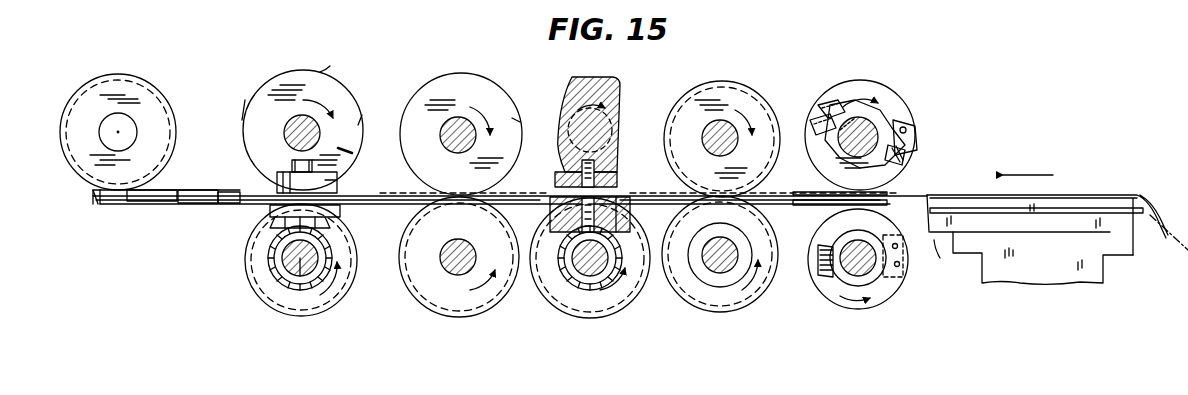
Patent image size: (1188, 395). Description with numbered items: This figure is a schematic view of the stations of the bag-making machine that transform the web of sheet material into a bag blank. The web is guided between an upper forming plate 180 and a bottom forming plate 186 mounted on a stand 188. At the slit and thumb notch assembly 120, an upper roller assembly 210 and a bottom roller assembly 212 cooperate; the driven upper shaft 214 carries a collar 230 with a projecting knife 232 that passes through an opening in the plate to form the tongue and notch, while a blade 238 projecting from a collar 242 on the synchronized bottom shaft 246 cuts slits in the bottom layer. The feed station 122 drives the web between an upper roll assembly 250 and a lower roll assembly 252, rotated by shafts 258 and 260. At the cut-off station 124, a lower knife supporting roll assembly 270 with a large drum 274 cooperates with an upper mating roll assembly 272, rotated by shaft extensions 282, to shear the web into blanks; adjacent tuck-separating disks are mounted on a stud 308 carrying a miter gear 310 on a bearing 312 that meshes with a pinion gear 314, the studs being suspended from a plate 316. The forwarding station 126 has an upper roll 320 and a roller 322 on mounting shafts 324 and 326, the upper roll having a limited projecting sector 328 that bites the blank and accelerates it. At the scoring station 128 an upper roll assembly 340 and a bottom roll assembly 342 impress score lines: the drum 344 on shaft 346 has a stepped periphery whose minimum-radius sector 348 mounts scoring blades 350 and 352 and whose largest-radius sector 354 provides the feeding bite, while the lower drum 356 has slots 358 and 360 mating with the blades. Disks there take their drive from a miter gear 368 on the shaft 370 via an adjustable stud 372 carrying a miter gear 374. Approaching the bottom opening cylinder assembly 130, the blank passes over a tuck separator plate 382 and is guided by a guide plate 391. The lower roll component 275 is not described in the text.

The slit and thumb notch assembly 120 is at (842, 80).
The feed station 122 is at (740, 66).
The cut-off station 124 is at (606, 72).
The forwarding station 126 is at (432, 325).
The scoring station 128 is at (278, 322).
The bottom opening cylinder and tuck spreader assembly 130 is at (122, 70).
The upper forming plate 180 is at (992, 196).
The bottom forming plate 186 is at (977, 232).
The stand 188 is at (1105, 272).
The upper roller assembly 210 is at (925, 118).
The bottom roller assembly 212 is at (893, 298).
The upper shaft 214 is at (845, 112).
The collar 230 is at (900, 118).
The projecting knife 232 is at (905, 160).
The blade 238 is at (905, 257).
The collar 242 is at (822, 218).
The bottom shaft 246 is at (845, 272).
The upper roll assembly 250 is at (704, 86).
The lower roll assembly 252 is at (720, 313).
The shaft 258 is at (738, 148).
The shaft 260 is at (708, 265).
The lower knife supporting roll assembly 270 is at (628, 322).
The upper mating roll assembly 272 is at (613, 96).
The drum 274 is at (565, 305).
The anvil roll shaft 275 is at (593, 275).
The shaft extensions 282 is at (598, 128).
The stud 308 is at (618, 172).
The miter gear 310 is at (560, 220).
The bearing 312 is at (618, 215).
The pinion gear 314 is at (565, 278).
The plate 316 is at (532, 188).
The upper roll 320 is at (495, 90).
The roller 322 is at (455, 315).
The mounting shaft 324 is at (452, 120).
The mounting shaft 326 is at (448, 270).
The projecting sector 328 is at (514, 118).
The upper roll assembly 340 is at (345, 88).
The bottom roll assembly 342 is at (270, 308).
The drum 344 is at (362, 112).
The shaft 346 is at (293, 130).
The sector 348 is at (243, 130).
The scoring blade 350 is at (340, 182).
The scoring blade 352 is at (354, 152).
The sector 354 is at (312, 59).
The drum 356 is at (348, 278).
The slot 358 is at (343, 212).
The slot 360 is at (345, 232).
The miter gear 368 is at (302, 288).
The shaft 370 is at (288, 262).
The adjustable stud 372 is at (292, 163).
The miter gear 374 is at (270, 240).
The tuck separator plate 382 is at (207, 203).
The guide plate 391 is at (180, 203).